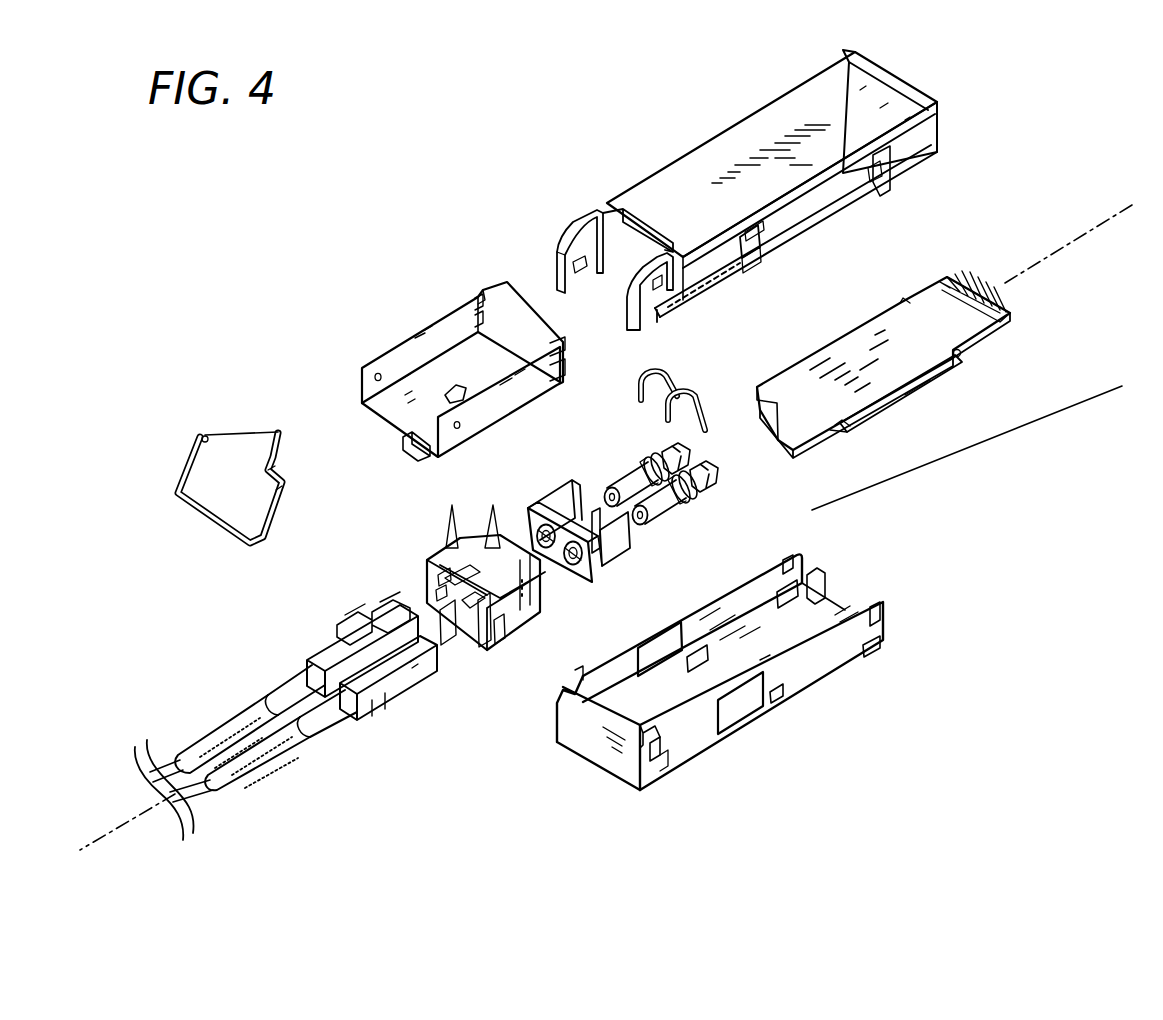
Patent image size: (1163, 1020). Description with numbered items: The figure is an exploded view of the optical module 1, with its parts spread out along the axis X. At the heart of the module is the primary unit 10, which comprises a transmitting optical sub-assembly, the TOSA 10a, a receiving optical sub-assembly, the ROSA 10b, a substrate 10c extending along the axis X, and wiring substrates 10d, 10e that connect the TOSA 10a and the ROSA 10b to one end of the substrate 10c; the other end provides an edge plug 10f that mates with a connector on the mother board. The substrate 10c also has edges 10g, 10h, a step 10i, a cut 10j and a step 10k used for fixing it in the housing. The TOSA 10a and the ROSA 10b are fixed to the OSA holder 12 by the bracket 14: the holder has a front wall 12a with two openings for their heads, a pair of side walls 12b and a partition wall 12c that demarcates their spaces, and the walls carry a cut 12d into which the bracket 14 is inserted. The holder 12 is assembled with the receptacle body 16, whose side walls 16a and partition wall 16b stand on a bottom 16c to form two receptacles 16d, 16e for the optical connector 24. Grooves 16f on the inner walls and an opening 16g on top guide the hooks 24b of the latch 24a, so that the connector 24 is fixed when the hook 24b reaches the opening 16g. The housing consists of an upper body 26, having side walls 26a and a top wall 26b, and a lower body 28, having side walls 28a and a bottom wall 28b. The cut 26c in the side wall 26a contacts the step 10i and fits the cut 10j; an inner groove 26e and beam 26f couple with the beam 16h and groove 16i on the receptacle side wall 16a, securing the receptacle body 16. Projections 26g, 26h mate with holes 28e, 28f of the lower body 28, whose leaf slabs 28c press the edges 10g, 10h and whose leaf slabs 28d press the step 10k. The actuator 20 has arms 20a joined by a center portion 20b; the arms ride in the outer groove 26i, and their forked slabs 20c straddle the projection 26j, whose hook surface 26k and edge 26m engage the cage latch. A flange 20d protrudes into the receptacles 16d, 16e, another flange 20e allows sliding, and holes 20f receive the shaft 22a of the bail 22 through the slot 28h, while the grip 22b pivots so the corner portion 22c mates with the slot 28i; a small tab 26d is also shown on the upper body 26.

The optical module 1 is at (1050, 136).
The axis X is at (1100, 215).
The primary unit 10 is at (885, 458).
The transmitting optical sub-assembly (TOSA) 10a is at (642, 470).
The receiving optical sub-assembly (ROSA) 10b is at (692, 508).
The substrate 10c is at (910, 405).
The wiring substrate 10d is at (692, 456).
The wiring substrate 10e is at (718, 476).
The edge plug 10f is at (1012, 322).
The edge of substrate 10g is at (945, 374).
The edge of substrate 10h is at (828, 335).
The step of substrate 10i is at (845, 430).
The cut in substrate 10j is at (962, 350).
The step of substrate 10k is at (915, 295).
The OSA holder 12 is at (642, 546).
The front wall 12a is at (588, 585).
The side wall 12b is at (559, 496).
The partition wall 12c is at (598, 510).
The cut 12d is at (605, 578).
The bracket 14 is at (698, 404).
The receptacle body 16 is at (490, 663).
The side wall 16a is at (437, 575).
The partition wall 16b is at (453, 650).
The bottom 16c is at (445, 610).
The receptacle 16d is at (440, 598).
The receptacle 16e is at (486, 662).
The groove 16f is at (451, 545).
The opening 16g is at (489, 545).
The beam 16h is at (500, 640).
The groove 16i is at (535, 600).
The actuator 20 is at (362, 350).
The arm 20a is at (420, 343).
The center portion 20b is at (392, 415).
The forked slab 20c is at (501, 287).
The flange 20d is at (460, 385).
The flange 20e is at (413, 460).
The hole 20f is at (462, 430).
The bail 22 is at (228, 402).
The shaft 22a is at (279, 440).
The grip 22b is at (214, 518).
The corner portion 22c is at (218, 437).
The optical connector 24 is at (368, 738).
The latch 24a is at (352, 632).
The hook 24b is at (398, 650).
The upper body 26 is at (903, 79).
The side wall 26a is at (806, 82).
The top wall 26b is at (795, 108).
The cut 26c is at (762, 252).
The cover tab 26d is at (873, 190).
The groove 26e is at (583, 272).
The beam 26f is at (607, 228).
The projection 26g is at (640, 300).
The projection 26h is at (900, 180).
The groove 26i is at (690, 300).
The projection 26j is at (770, 238).
The hook surface 26k is at (745, 285).
The edge 26m is at (748, 250).
The lower body 28 is at (745, 752).
The side wall 28a is at (790, 553).
The bottom wall 28b is at (600, 772).
The leaf slab 28c is at (705, 660).
The leaf slab 28d is at (822, 580).
The hole 28e is at (665, 752).
The hole 28f is at (887, 606).
The slot 28h is at (650, 765).
The slot 28i is at (666, 778).